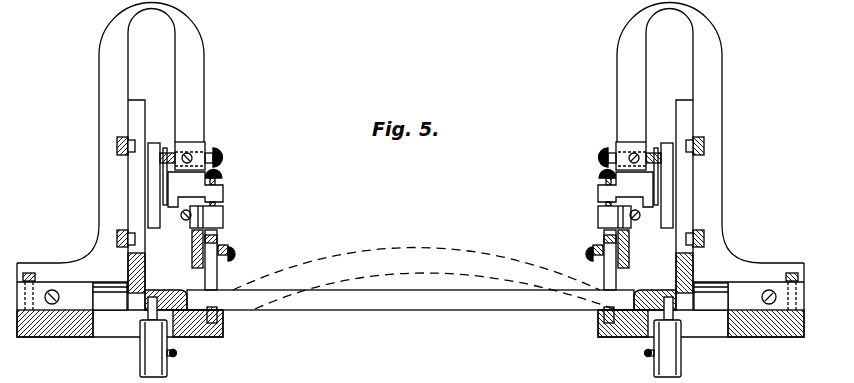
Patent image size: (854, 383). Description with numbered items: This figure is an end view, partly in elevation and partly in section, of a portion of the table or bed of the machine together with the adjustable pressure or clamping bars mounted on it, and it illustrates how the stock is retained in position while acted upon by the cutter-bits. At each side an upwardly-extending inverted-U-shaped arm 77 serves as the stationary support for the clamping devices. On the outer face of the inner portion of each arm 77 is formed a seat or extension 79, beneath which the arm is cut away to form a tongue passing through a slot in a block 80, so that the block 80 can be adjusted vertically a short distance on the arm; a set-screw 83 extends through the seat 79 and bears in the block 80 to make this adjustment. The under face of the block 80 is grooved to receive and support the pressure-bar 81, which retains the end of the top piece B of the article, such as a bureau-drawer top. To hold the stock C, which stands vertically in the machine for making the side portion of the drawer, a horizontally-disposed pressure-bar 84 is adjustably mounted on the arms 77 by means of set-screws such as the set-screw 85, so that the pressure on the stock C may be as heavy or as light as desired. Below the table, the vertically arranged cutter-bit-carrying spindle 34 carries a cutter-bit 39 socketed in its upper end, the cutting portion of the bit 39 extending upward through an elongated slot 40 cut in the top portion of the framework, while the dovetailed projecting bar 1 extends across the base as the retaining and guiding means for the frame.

The inverted-U-shaped arm 77 is at (617, 71).
The stock C is at (137, 103).
The horizontally-disposed pressure-bar 84 is at (153, 141).
The dovetailed projecting strip or bar 1 is at (386, 251).
The set-screw 85 is at (216, 149).
The set-screw 83 is at (222, 174).
The seat or extension 79 is at (223, 192).
The block 80 is at (222, 215).
The pressure-bar 81 is at (205, 278).
The top piece B is at (225, 290).
The cutter-bit 39 is at (148, 313).
The elongated slot 40 is at (705, 280).
The cutter-bit-carrying spindle 34 is at (152, 352).